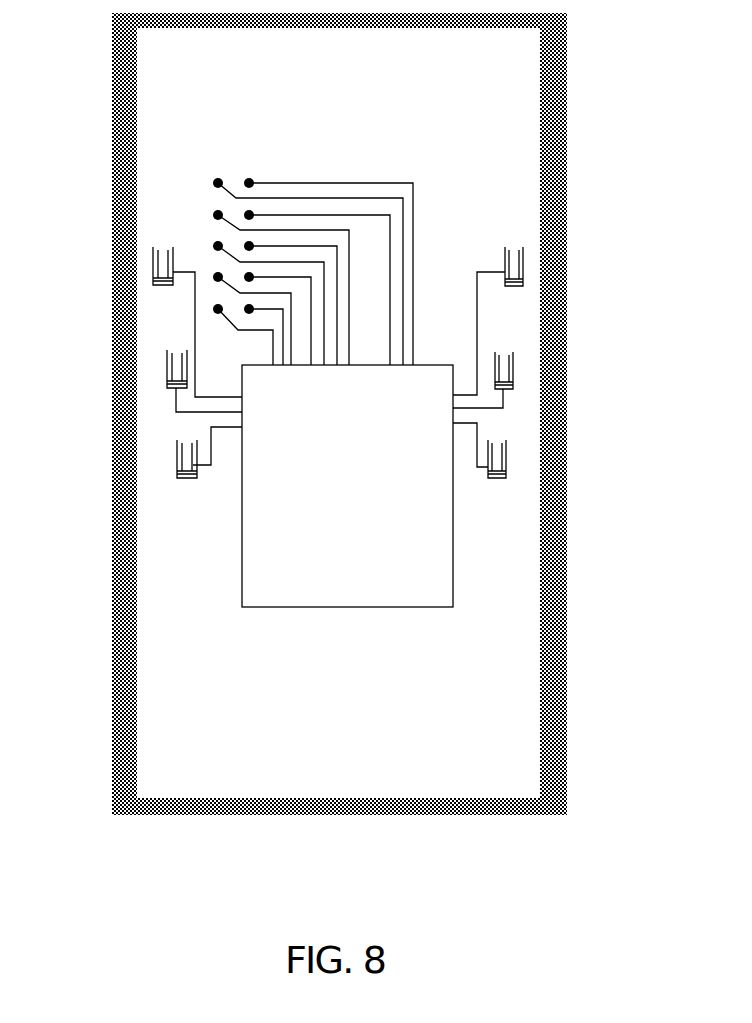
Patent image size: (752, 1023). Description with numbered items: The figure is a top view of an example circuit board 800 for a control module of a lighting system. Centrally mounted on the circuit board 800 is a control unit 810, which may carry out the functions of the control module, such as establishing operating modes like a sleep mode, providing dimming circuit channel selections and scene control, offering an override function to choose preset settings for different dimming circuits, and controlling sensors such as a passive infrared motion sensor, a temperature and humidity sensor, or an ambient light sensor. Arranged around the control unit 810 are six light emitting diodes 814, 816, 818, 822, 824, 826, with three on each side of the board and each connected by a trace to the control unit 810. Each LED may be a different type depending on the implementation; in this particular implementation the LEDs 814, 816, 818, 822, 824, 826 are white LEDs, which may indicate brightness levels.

The circuit board 800 is at (355, 897).
The control unit 810 is at (453, 545).
The light emitting diode 814 is at (153, 263).
The light emitting diode 816 is at (167, 365).
The light emitting diode 818 is at (177, 458).
The light emitting diode 822 is at (523, 262).
The light emitting diode 824 is at (513, 367).
The light emitting diode 826 is at (507, 460).